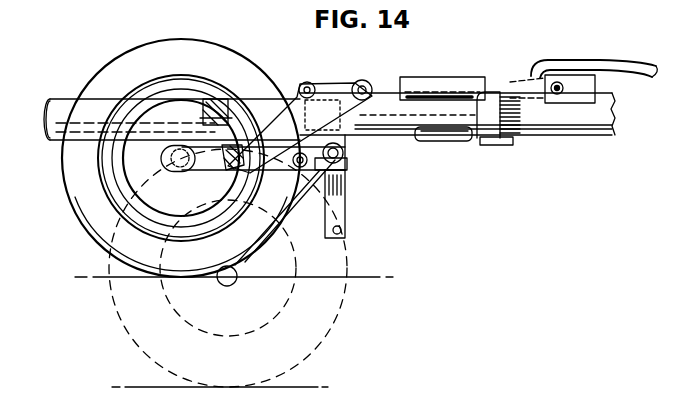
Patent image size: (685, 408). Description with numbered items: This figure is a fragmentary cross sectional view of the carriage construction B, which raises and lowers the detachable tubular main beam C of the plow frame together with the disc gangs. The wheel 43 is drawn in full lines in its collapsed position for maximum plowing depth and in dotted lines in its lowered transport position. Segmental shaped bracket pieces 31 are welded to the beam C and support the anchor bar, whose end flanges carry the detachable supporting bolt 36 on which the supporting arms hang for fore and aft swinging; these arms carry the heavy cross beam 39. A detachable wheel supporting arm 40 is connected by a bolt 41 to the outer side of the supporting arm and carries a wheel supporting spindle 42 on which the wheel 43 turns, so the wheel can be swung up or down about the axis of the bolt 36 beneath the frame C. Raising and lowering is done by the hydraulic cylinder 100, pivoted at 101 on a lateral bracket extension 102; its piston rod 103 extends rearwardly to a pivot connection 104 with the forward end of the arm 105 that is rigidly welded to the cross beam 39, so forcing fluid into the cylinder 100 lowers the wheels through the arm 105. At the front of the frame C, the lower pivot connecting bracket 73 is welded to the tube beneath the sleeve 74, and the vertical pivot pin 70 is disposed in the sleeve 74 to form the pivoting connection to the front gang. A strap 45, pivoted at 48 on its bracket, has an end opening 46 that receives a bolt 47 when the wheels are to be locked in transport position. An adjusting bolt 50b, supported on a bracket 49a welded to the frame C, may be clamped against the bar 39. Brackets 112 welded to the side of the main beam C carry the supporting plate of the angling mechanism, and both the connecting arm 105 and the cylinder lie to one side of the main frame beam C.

The bracket 112 is at (212, 103).
The bracket 49a is at (236, 98).
The arm 105 is at (292, 126).
The wheel supporting arm 40 is at (286, 96).
The pivot connection 104 is at (366, 81).
The cylinder piston rod 103 is at (400, 77).
The hydraulic cylinder 100 is at (433, 80).
The lateral bracket extension 102 is at (600, 82).
The pivot 101 is at (560, 94).
The sleeve 74 is at (505, 118).
The lower pivot connecting bracket 73 is at (467, 138).
The vertical pivot pin 70 is at (492, 147).
The bracket piece 31 is at (353, 116).
The supporting bolt 36 is at (344, 153).
The pivot 48 is at (346, 170).
The strap 45 is at (346, 205).
The end opening 46 is at (342, 231).
The bolt 47 is at (283, 220).
The bolt 41 is at (258, 176).
The cross beam 39 is at (222, 180).
The wheel supporting spindle 42 is at (163, 163).
The adjusting bolt 50b is at (192, 166).
The wheel 43 is at (97, 225).
The carriage construction B is at (73, 198).
The main beam C is at (80, 124).